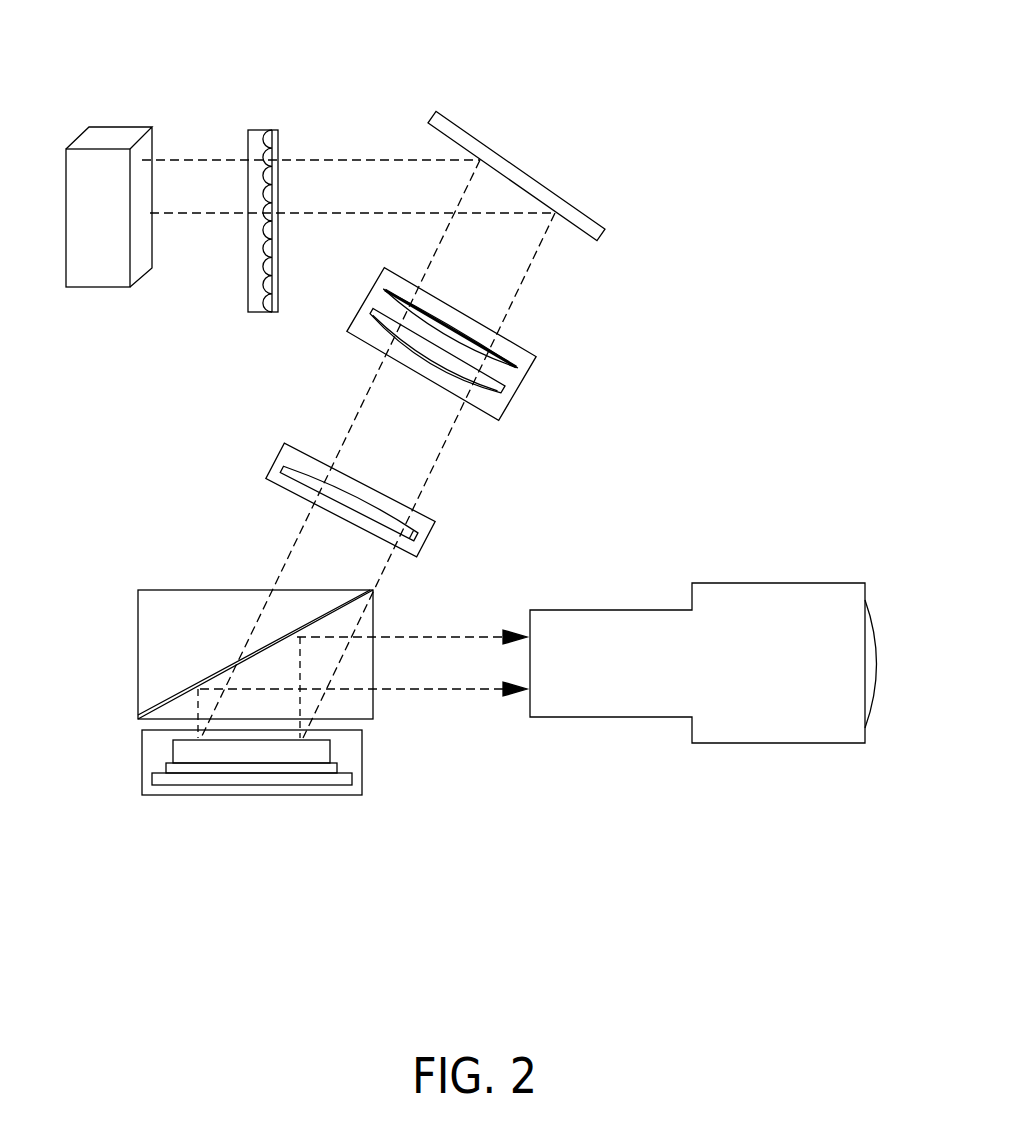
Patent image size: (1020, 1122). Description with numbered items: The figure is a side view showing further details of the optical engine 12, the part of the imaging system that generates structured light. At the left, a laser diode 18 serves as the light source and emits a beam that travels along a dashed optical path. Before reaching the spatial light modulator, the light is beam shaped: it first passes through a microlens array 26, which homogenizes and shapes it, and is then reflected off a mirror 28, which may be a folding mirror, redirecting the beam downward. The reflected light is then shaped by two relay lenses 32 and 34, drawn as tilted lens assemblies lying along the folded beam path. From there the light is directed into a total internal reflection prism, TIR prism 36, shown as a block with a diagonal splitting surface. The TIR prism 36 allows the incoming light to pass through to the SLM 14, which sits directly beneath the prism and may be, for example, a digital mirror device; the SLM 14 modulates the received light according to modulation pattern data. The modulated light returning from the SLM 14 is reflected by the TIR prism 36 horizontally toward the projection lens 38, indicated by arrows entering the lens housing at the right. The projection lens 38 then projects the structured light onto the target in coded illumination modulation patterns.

The optical engine 12 is at (733, 289).
The SLM 14 is at (180, 795).
The laser diode 18 is at (113, 127).
The microlens array 26 is at (280, 135).
The mirror 28 is at (517, 165).
The relay lens 32 is at (517, 392).
The relay lens 34 is at (430, 543).
The TIR prism 36 is at (178, 572).
The projection lens 38 is at (610, 717).